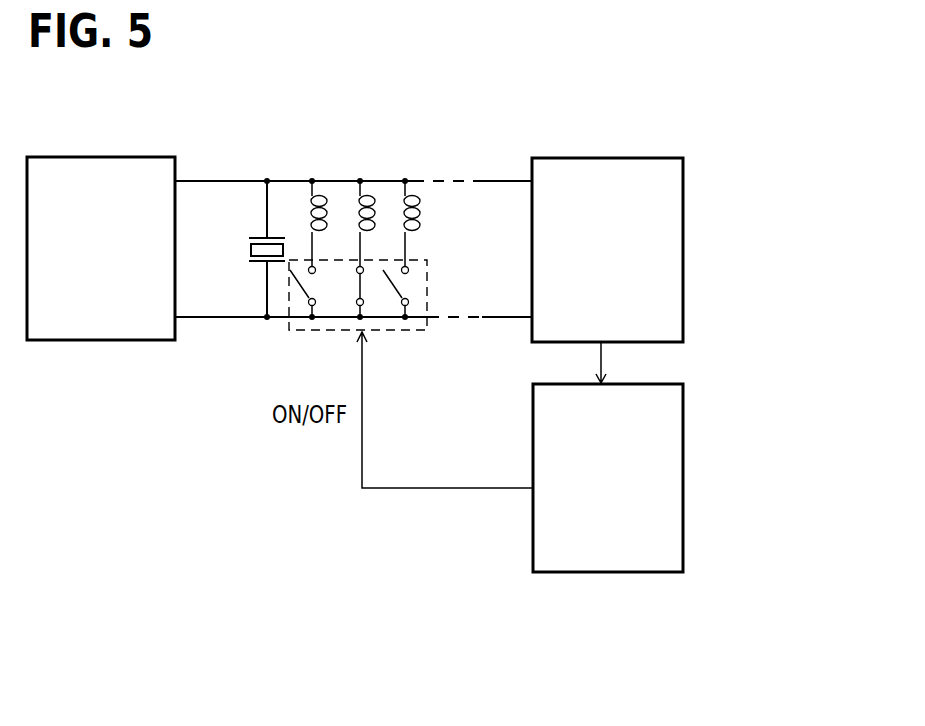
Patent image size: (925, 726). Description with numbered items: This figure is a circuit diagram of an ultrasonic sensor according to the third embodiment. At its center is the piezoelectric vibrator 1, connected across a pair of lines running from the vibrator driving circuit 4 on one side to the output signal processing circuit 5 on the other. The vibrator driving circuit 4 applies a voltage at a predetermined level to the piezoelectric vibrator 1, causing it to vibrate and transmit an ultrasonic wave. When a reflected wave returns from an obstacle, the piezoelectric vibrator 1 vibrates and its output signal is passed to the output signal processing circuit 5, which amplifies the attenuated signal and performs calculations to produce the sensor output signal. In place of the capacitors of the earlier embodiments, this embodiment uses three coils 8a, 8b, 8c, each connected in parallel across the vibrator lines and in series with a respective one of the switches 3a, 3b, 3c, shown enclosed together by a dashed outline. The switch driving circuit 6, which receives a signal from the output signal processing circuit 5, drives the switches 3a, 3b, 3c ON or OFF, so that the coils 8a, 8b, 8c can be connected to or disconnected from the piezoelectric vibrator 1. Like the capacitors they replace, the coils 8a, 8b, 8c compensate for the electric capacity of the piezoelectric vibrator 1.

The piezoelectric vibrator 1 is at (252, 238).
The switch 3a is at (306, 292).
The switch 3b is at (358, 283).
The switch 3c is at (393, 291).
The vibrator driving circuit 4 is at (80, 340).
The output signal processing circuit 5 is at (684, 236).
The switch driving circuit 6 is at (684, 465).
The coil 8a is at (312, 181).
The coil 8b is at (360, 181).
The coil 8c is at (405, 181).